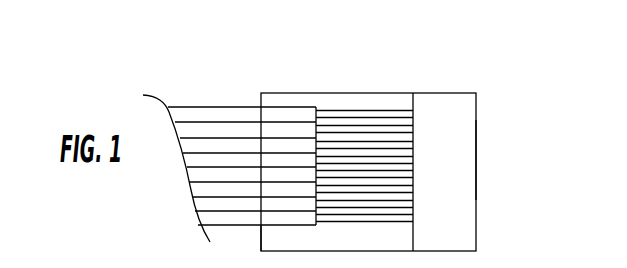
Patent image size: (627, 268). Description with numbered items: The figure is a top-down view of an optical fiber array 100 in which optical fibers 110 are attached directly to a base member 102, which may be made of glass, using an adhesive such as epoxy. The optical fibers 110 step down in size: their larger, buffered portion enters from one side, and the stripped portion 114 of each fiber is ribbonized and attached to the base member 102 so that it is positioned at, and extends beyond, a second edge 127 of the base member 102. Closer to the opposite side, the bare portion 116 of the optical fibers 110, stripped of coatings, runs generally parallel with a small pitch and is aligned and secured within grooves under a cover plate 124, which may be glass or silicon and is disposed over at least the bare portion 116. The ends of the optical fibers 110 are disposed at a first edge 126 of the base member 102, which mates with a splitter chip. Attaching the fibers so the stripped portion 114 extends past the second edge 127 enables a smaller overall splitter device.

The optical fiber array 100 is at (318, 73).
The base member 102 is at (397, 93).
The optical fibers 110 is at (200, 98).
The stripped portion 114 is at (230, 108).
The bare portion 116 is at (348, 111).
The cover plate 124 is at (477, 133).
The first edge 126 is at (477, 187).
The second edge 127 is at (261, 233).